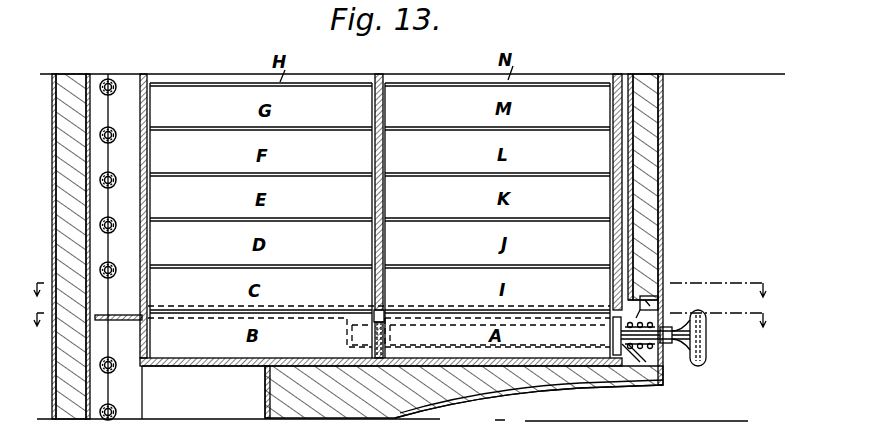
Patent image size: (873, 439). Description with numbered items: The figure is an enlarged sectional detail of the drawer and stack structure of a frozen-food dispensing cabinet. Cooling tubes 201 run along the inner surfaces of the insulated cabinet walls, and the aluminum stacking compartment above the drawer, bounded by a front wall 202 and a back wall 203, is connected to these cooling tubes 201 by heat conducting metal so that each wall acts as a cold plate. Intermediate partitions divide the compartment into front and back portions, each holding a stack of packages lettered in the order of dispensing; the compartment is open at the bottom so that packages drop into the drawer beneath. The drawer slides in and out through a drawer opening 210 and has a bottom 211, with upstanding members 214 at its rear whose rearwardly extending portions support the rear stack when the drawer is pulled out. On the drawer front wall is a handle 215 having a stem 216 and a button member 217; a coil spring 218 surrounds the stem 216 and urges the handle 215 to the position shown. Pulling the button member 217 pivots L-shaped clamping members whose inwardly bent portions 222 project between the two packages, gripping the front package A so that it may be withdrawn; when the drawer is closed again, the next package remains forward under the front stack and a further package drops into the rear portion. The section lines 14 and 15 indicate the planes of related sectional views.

The cooling tubes 201 is at (108, 80).
The back wall 203 is at (144, 74).
The front wall 202 is at (618, 76).
The drawer openings 210 is at (663, 300).
The section line 15 is at (399, 280).
The section line 14 is at (399, 311).
The upstanding members 214 is at (138, 316).
The inwardly bent portion 222 is at (384, 322).
The button member 217 is at (605, 333).
The handle 215 is at (705, 356).
The bottom 211 is at (225, 366).
The stem 216 is at (590, 386).
The coil spring 218 is at (645, 348).